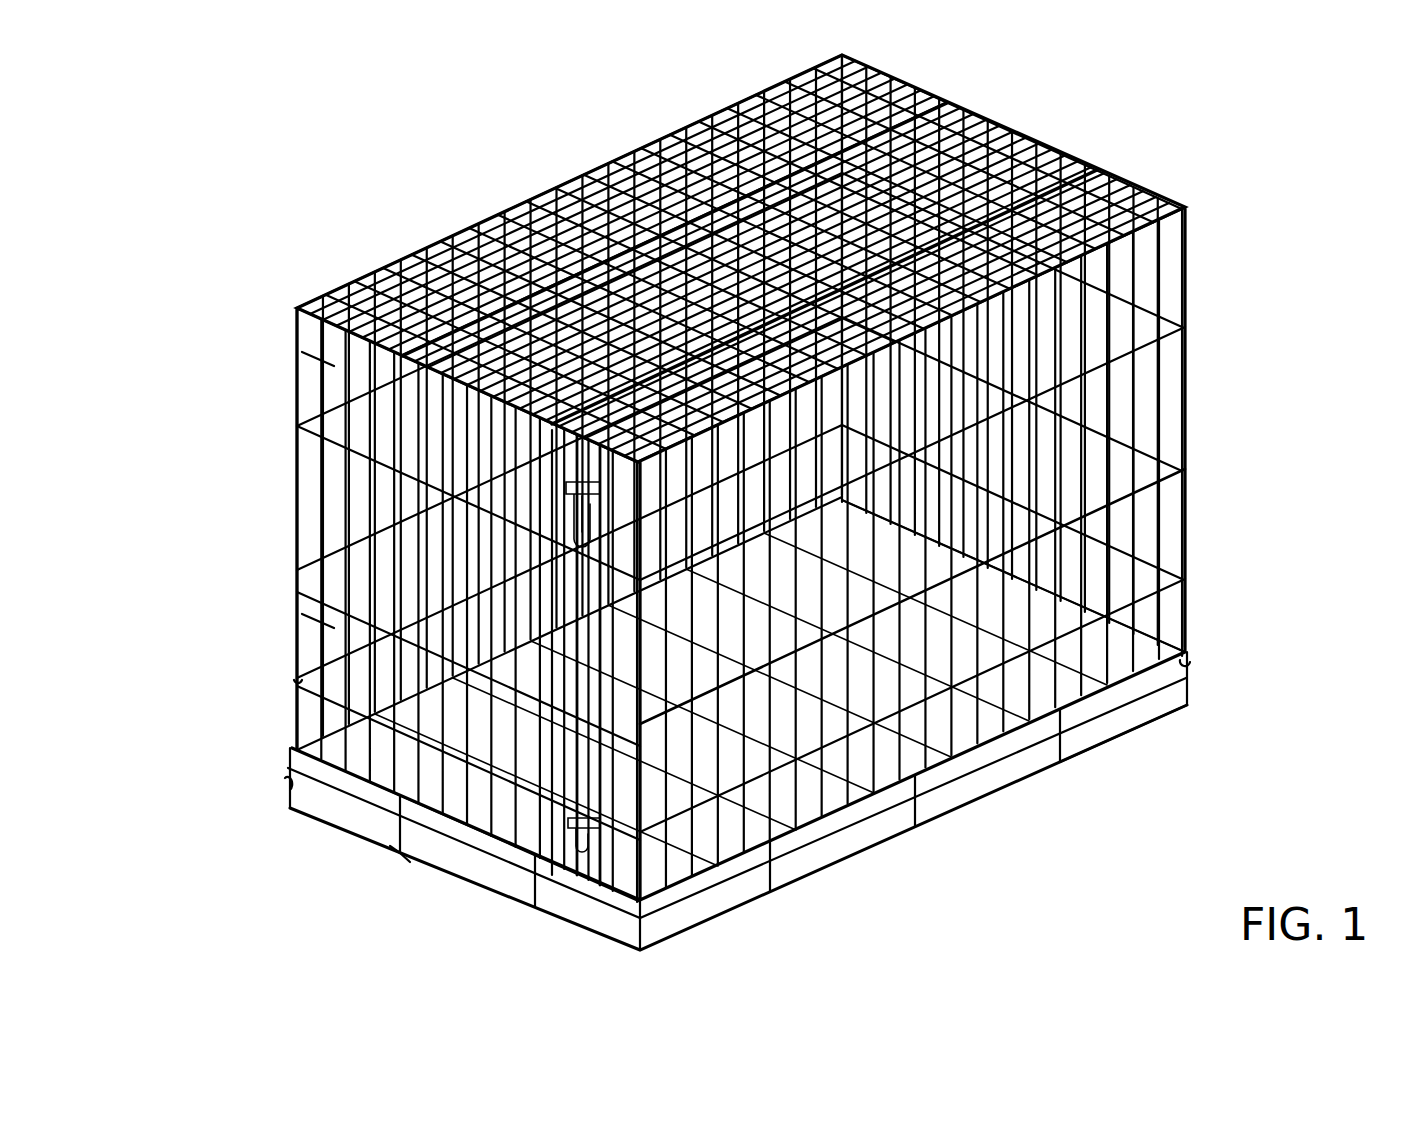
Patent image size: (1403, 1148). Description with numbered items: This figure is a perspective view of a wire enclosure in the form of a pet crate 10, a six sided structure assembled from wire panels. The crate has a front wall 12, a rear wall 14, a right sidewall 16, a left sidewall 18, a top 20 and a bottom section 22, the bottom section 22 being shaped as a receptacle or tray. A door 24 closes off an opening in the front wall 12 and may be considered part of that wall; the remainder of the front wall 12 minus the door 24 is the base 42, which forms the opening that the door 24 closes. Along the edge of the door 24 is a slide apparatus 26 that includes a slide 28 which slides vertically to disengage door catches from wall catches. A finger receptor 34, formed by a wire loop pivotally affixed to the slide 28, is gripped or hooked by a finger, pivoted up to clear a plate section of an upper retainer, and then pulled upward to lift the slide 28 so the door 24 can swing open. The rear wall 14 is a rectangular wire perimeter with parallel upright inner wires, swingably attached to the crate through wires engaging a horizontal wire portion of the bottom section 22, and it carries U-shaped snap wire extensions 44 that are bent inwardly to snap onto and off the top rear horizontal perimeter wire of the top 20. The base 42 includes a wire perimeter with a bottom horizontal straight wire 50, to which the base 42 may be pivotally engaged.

The pet crate 10 is at (417, 200).
The front wall 12 is at (332, 812).
The rear wall 14 is at (1152, 492).
The right sidewall 16 is at (1178, 524).
The left sidewall 18 is at (314, 426).
The top 20 is at (1033, 168).
The bottom section 22 is at (1160, 714).
The door 24 is at (490, 748).
The slide apparatus 26 is at (560, 766).
The slide 28 is at (576, 828).
The finger receptor 34 is at (568, 540).
The base 42 is at (310, 686).
The snap wire extensions 44 is at (922, 84).
The bottom horizontal straight wire 50 is at (365, 805).